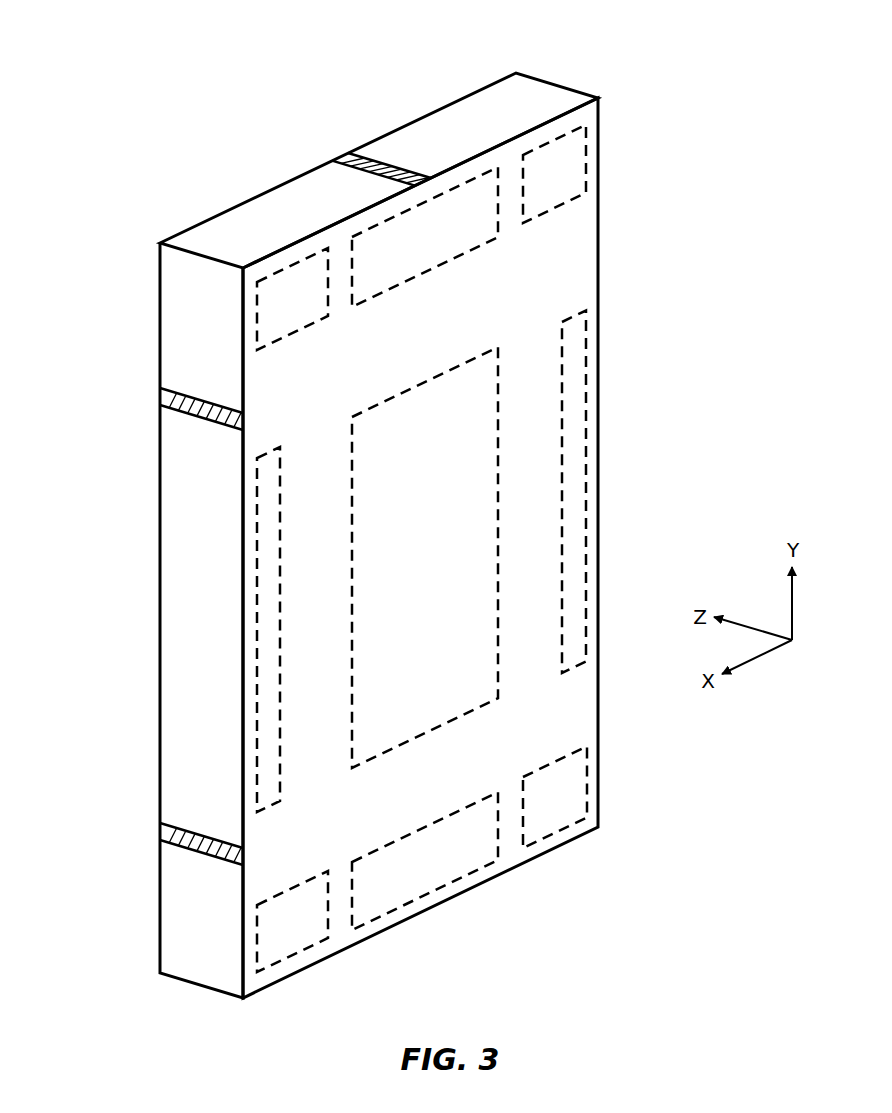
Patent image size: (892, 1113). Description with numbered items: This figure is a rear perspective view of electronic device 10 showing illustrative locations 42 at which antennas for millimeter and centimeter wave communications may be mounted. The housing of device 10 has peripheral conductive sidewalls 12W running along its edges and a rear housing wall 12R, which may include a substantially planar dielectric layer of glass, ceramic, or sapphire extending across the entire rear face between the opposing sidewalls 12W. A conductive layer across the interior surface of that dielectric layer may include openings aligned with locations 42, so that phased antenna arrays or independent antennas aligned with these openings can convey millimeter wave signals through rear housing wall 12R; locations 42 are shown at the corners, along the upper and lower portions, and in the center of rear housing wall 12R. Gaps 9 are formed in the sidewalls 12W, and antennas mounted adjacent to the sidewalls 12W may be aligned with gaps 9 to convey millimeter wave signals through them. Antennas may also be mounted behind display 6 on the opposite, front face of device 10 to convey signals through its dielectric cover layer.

The display 6 is at (377, 524).
The gaps 9 is at (360, 160).
The electronic device 10 is at (260, 68).
The peripheral conductive sidewalls 12W is at (435, 128).
The rear housing wall 12R is at (566, 269).
The locations 42 is at (262, 458).